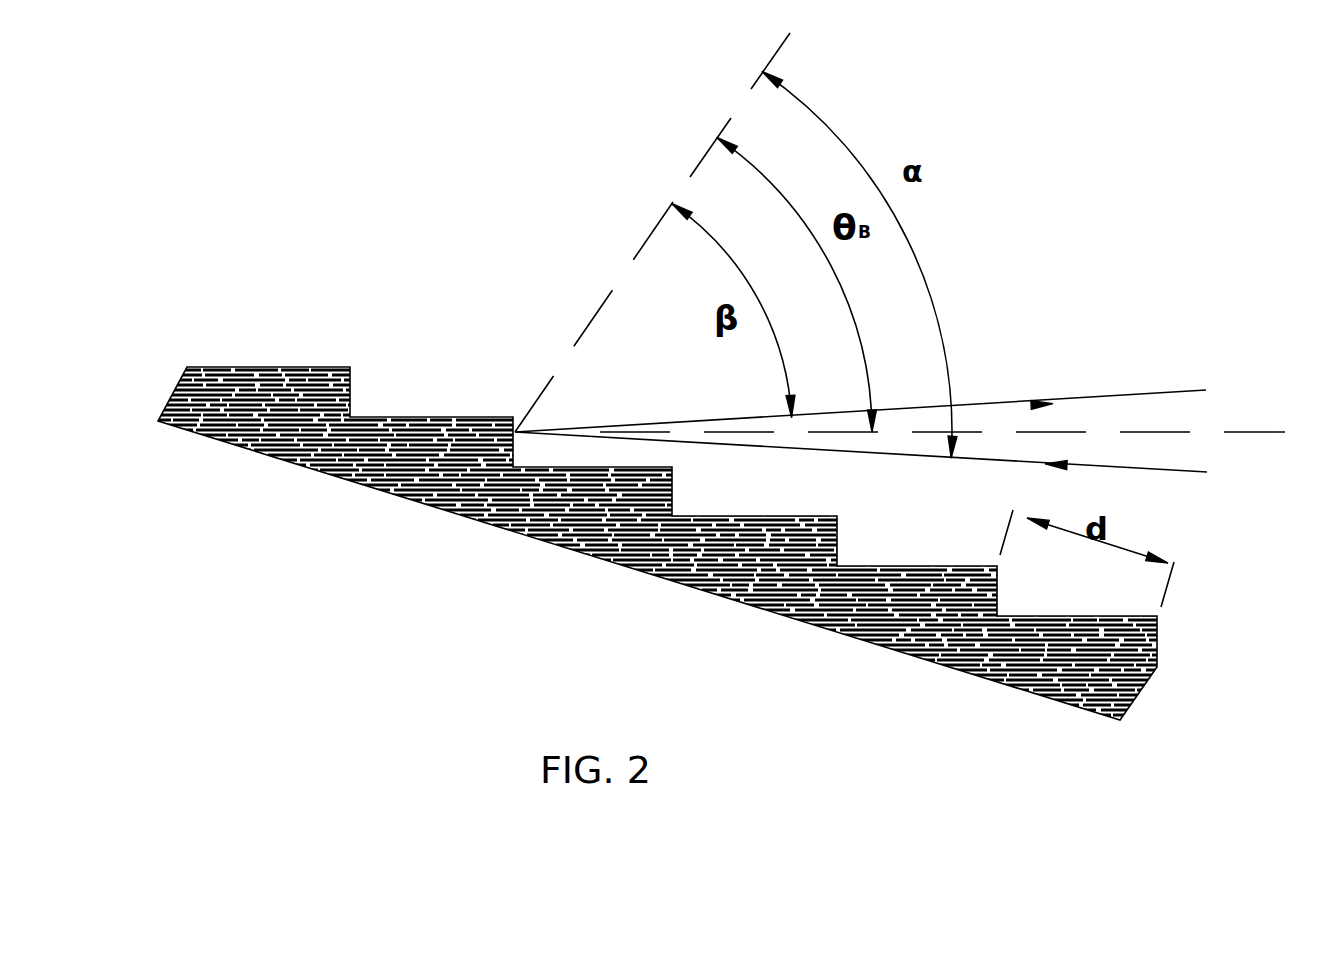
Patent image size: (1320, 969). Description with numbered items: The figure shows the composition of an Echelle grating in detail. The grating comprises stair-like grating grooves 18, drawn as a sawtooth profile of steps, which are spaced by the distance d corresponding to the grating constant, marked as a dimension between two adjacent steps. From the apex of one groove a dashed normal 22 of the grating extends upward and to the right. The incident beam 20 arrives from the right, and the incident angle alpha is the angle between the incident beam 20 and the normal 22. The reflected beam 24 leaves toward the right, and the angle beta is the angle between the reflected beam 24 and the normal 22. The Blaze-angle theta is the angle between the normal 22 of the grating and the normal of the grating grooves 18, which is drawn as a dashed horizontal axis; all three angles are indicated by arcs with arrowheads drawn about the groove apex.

The grating grooves 18 is at (363, 388).
The incident beam 20 is at (1185, 474).
The normal 22 is at (705, 152).
The reflected beam 24 is at (1149, 392).